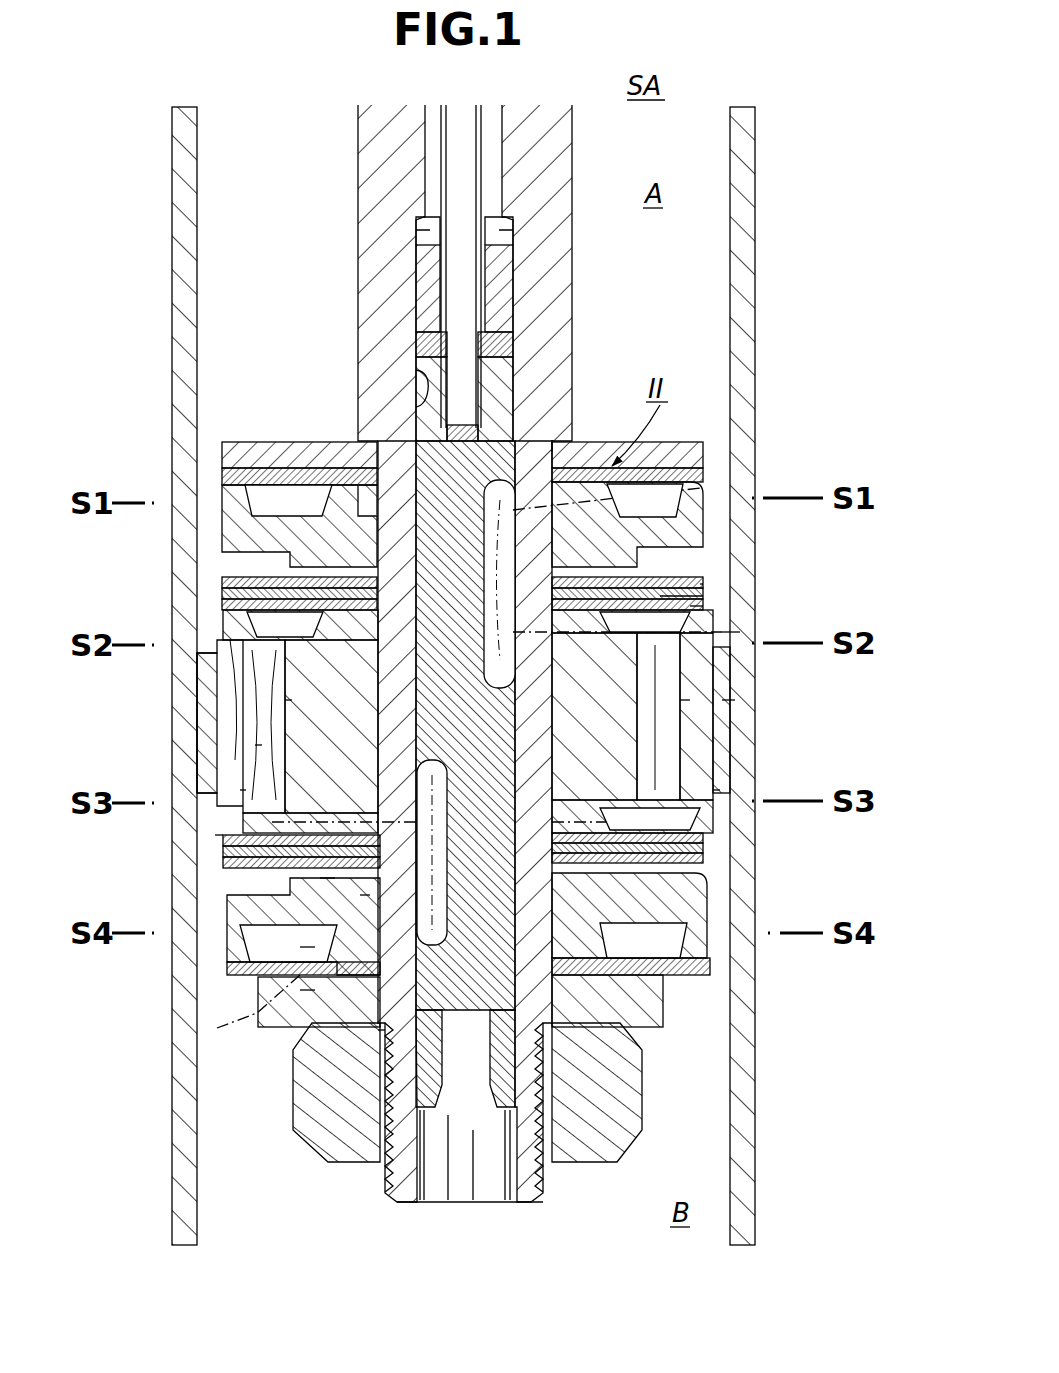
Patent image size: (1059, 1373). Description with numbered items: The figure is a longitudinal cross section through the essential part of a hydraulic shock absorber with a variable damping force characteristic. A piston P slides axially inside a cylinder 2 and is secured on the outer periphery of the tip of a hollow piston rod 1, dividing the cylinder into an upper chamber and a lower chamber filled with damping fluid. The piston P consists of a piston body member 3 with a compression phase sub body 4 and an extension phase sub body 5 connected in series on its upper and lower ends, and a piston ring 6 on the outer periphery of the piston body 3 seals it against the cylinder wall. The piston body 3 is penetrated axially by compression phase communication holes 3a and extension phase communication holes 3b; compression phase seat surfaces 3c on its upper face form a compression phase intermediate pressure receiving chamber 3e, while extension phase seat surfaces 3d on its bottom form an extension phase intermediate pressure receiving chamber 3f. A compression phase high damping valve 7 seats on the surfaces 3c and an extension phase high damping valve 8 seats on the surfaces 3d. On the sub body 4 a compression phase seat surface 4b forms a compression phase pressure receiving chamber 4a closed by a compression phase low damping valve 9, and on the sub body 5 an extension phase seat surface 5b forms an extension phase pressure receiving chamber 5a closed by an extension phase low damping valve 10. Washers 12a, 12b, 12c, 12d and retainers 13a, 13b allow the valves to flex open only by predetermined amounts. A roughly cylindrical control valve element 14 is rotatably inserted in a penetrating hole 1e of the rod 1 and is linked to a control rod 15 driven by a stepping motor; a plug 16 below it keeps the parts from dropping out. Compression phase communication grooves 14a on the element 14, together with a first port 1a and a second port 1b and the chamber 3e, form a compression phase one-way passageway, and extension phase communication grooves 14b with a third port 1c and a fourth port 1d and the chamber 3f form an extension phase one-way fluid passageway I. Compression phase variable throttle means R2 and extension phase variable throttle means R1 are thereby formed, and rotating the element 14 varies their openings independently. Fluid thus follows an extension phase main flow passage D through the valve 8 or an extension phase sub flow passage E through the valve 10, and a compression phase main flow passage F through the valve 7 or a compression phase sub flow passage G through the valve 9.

The piston rod 1 is at (355, 162).
The first radial hole (port) 1a is at (553, 442).
The second port 1b is at (685, 700).
The third radial hole (port) 1c is at (290, 705).
The fourth radial hole (port) 1d is at (378, 1030).
The penetrating hole 1e is at (428, 400).
The cylinder 2 is at (168, 213).
The piston body member 3 is at (700, 628).
The compression phase communication holes 3a is at (722, 745).
The extension phase communication holes 3b is at (265, 657).
The compression phase seat surfaces 3c is at (703, 606).
The extension phase seat surfaces 3d is at (225, 842).
The compression phase intermediate pressure receiving chamber 3e is at (705, 596).
The extension phase intermediate pressure receiving chamber 3f is at (325, 878).
The compression phase sub body 4 is at (222, 522).
The compression phase pressure receiving chamber 4a is at (700, 505).
The compression phase seat surface 4b is at (705, 478).
The extension phase sub body 5 is at (712, 900).
The extension phase pressure receiving chamber 5a is at (310, 947).
The extension phase seat surface 5b is at (240, 968).
The piston ring 6 is at (715, 788).
The compression phase high damping valve 7 is at (703, 584).
The extension phase high damping valve 8 is at (240, 851).
The compression phase low damping valve 9 is at (662, 455).
The extension phase low damping valve 10 is at (310, 990).
The washer 12a is at (355, 442).
The washer 12b is at (300, 588).
The washer 12c is at (705, 875).
The washer 12d is at (665, 1020).
The retainer 13a is at (222, 455).
The retainer 13b is at (665, 990).
The control valve element 14 is at (418, 383).
The compression phase communication grooves 14a is at (705, 585).
The extension phase communication grooves 14b is at (360, 895).
The control rod 15 is at (478, 158).
The plug 16 is at (300, 1072).
The extension phase variable throttle means R1 is at (435, 818).
The compression phase variable throttle means R2 is at (492, 640).
The piston P is at (232, 640).
The extension phase main flow passage D is at (260, 748).
The extension phase sub flow passage E is at (243, 790).
The compression phase main flow passage F is at (735, 700).
The compression phase sub flow passage G is at (735, 638).
The extension phase one-way fluid passageway I is at (240, 1030).